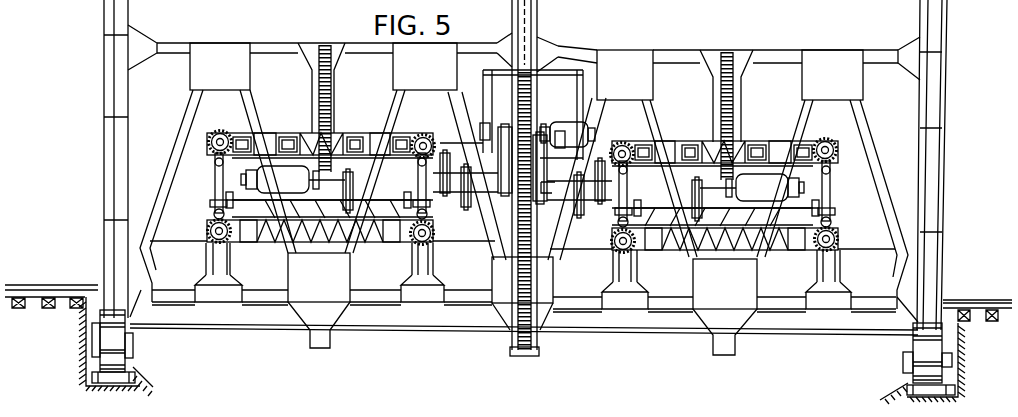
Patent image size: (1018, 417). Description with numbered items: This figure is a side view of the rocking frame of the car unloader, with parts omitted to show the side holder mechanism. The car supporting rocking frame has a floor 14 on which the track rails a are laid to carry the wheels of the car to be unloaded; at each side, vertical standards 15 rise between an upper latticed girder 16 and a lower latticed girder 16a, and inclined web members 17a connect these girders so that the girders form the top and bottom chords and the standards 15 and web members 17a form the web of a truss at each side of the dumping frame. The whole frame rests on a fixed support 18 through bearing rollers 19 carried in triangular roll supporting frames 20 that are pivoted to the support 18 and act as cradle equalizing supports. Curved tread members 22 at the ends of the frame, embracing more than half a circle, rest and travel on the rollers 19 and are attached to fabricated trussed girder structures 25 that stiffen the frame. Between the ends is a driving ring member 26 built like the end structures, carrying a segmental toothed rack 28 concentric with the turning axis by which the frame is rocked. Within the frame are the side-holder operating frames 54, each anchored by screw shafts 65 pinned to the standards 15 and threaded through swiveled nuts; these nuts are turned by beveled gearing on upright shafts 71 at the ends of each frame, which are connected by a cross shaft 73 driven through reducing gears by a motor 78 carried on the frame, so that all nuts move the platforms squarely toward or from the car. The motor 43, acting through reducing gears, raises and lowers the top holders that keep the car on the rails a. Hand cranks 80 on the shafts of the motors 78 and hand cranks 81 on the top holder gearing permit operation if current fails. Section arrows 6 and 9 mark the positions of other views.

The section line 6- 6 is at (828, 43).
The section line 9- 9 is at (322, 37).
The track rails a is at (980, 300).
The floor 14 is at (459, 300).
The vertical standards 15 is at (205, 253).
The upper latticed girder 16 is at (475, 31).
The lower latticed girder 16a is at (625, 333).
The web members 17a is at (880, 117).
The fixed support 18 is at (900, 378).
The bearing rollers 19 is at (115, 327).
The roll supporting frames 20 is at (86, 360).
The curved tread members 22 is at (930, 173).
The trussed girder structures 25 is at (944, 102).
The driving ring member 26 is at (541, 88).
The segmental toothed gear or rack 28 is at (523, 355).
The motor 43 is at (570, 130).
The conveyor frame 54 is at (284, 131).
The screw shafts 65 is at (210, 148).
The upright shafts 71 is at (617, 204).
The cross shaft 73 is at (387, 211).
The motor 78 is at (522, 110).
The hand cranks 80 is at (364, 172).
The hand cranks 81 is at (548, 186).